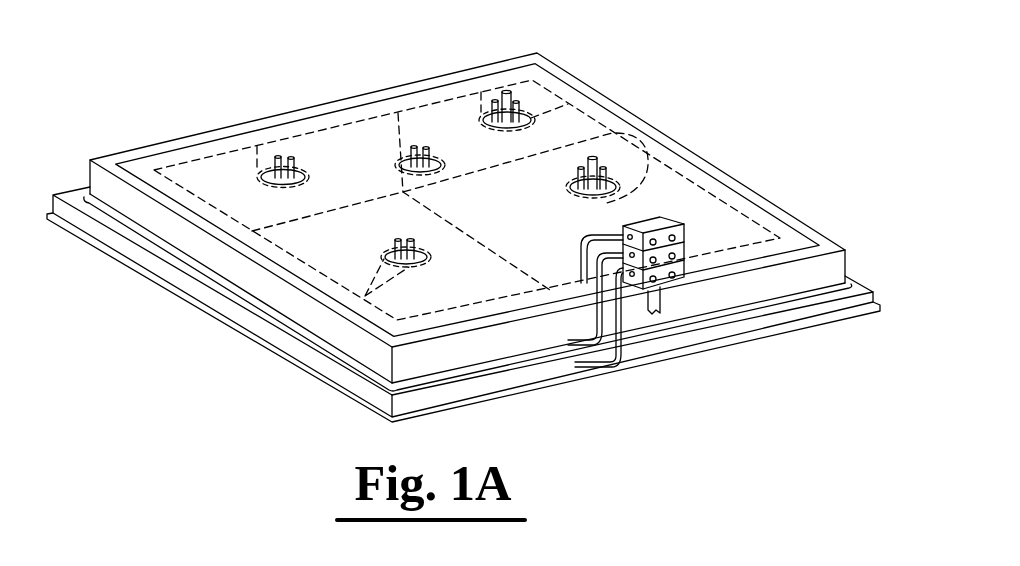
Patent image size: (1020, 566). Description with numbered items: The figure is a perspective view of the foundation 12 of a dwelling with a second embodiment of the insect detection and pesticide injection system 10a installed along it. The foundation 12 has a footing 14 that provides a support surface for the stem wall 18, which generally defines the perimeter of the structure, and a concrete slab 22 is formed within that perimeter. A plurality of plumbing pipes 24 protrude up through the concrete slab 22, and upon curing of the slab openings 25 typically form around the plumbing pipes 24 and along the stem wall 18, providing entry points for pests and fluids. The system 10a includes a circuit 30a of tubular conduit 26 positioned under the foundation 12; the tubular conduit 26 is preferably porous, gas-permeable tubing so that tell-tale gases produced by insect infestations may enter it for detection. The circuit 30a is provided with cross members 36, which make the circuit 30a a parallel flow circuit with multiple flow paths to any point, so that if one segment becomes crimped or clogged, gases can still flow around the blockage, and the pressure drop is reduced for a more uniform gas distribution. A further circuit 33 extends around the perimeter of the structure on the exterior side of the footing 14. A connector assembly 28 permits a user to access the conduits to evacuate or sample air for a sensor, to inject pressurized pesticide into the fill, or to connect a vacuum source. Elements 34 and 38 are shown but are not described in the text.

The pesticide injection system 10a is at (686, 90).
The foundation 12 is at (303, 110).
The footing 14 is at (220, 304).
The stem wall 18 is at (167, 230).
The concrete slab 22 is at (183, 164).
The plumbing pipes 24 is at (480, 100).
The openings 25 is at (270, 152).
The tubular conduit 26 is at (700, 177).
The connector assembly 28 is at (690, 247).
The circuit 30a is at (473, 313).
The circuit 33 is at (297, 367).
The base plate edge 34 is at (767, 305).
The cross member 36 is at (460, 233).
The zone boundary line 38 is at (570, 140).